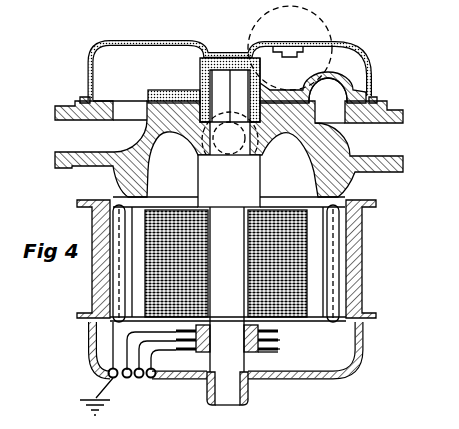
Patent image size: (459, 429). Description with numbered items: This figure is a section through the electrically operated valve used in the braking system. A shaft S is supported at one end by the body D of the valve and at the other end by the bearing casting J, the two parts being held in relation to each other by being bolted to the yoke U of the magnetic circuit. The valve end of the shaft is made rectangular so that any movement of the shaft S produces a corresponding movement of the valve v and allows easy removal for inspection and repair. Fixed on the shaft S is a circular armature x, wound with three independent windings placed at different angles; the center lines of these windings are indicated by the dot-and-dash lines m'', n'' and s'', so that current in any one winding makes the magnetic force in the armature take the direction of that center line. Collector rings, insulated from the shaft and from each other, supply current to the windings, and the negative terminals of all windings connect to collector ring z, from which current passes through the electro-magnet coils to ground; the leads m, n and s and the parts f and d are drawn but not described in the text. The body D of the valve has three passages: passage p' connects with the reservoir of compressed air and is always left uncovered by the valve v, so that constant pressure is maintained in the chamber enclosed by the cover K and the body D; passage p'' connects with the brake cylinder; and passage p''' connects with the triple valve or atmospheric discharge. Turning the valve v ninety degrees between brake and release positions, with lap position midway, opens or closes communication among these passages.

The cover K is at (103, 48).
The valve v is at (200, 78).
The valve member f is at (298, 58).
The passage d is at (312, 101).
The passage p' is at (101, 122).
The passage p'' is at (230, 140).
The passage p''' is at (359, 124).
The body of the valve D is at (193, 143).
The shaft S is at (229, 181).
The circular armature x is at (308, 277).
The yoke of the magnetic circuit U is at (362, 266).
The collector ring z is at (282, 331).
The center line of armature winding m'' is at (306, 347).
The center line of armature winding n'' is at (303, 358).
The center line of armature winding s'' is at (278, 363).
The bearing casting J is at (250, 400).
The terminal m is at (145, 374).
The terminal n is at (152, 383).
The terminal s is at (158, 382).